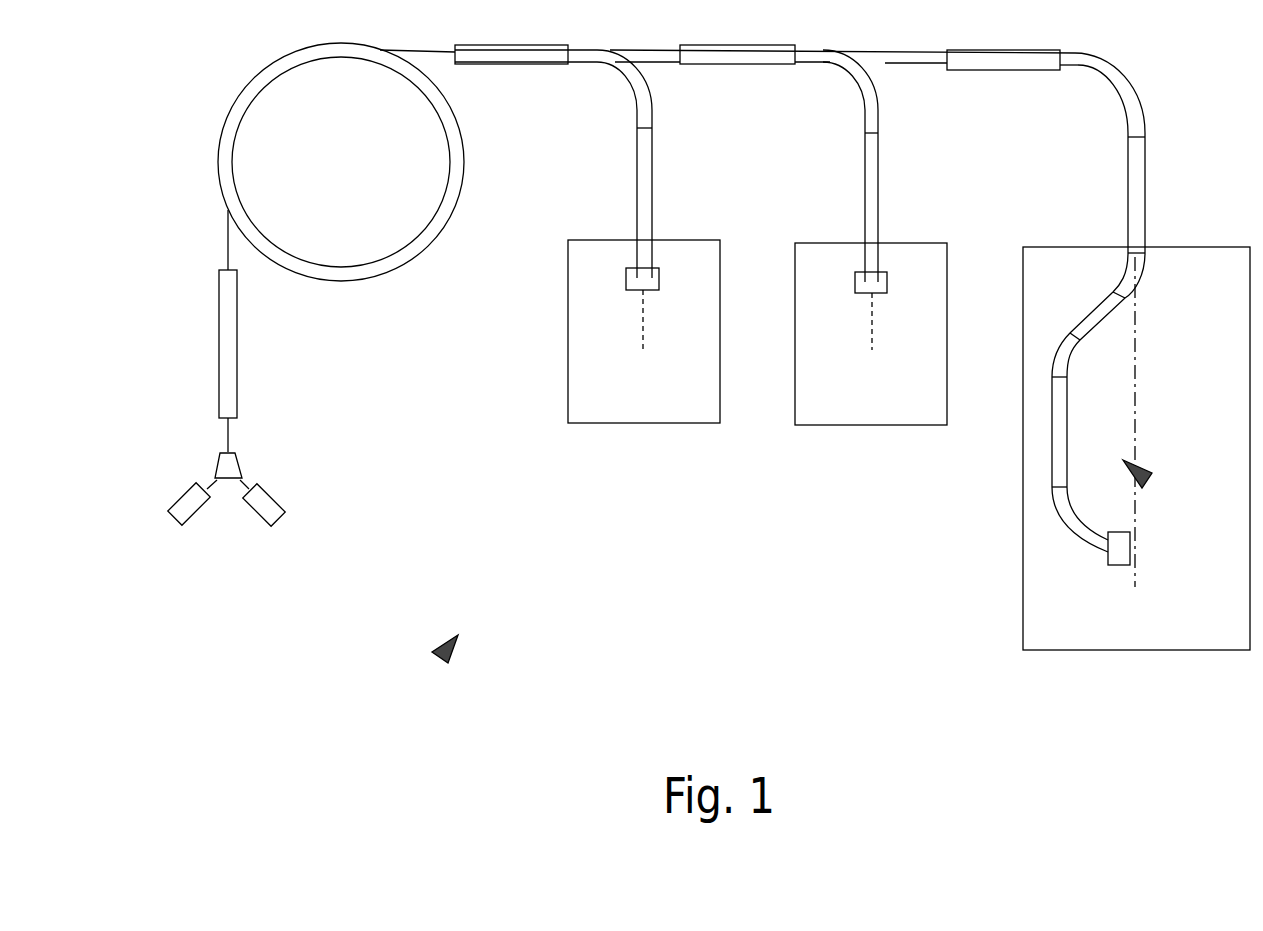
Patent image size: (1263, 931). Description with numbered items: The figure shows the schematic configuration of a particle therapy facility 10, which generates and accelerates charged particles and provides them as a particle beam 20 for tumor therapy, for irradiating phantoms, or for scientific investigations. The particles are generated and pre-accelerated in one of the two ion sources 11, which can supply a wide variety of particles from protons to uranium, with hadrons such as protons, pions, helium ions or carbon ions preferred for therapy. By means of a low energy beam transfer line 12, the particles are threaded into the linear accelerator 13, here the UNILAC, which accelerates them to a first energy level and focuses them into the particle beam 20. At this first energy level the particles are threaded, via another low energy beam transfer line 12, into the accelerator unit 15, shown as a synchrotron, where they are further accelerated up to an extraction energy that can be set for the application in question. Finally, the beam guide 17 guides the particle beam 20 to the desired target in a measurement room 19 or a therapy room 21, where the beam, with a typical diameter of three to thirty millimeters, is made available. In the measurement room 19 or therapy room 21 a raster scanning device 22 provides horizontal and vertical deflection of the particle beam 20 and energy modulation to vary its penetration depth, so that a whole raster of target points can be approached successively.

The particle therapy facility 10 is at (440, 660).
The ion source 11 is at (190, 513).
The low energy beam transfer line 12 is at (240, 468).
The linear accelerator 13 is at (228, 367).
The accelerator unit 15 is at (417, 253).
The beam guide 17 is at (537, 60).
The measurement room 19 is at (614, 425).
The particle beam 20 is at (643, 322).
The therapy room 21 is at (1147, 482).
The raster scanning device 22 is at (657, 270).